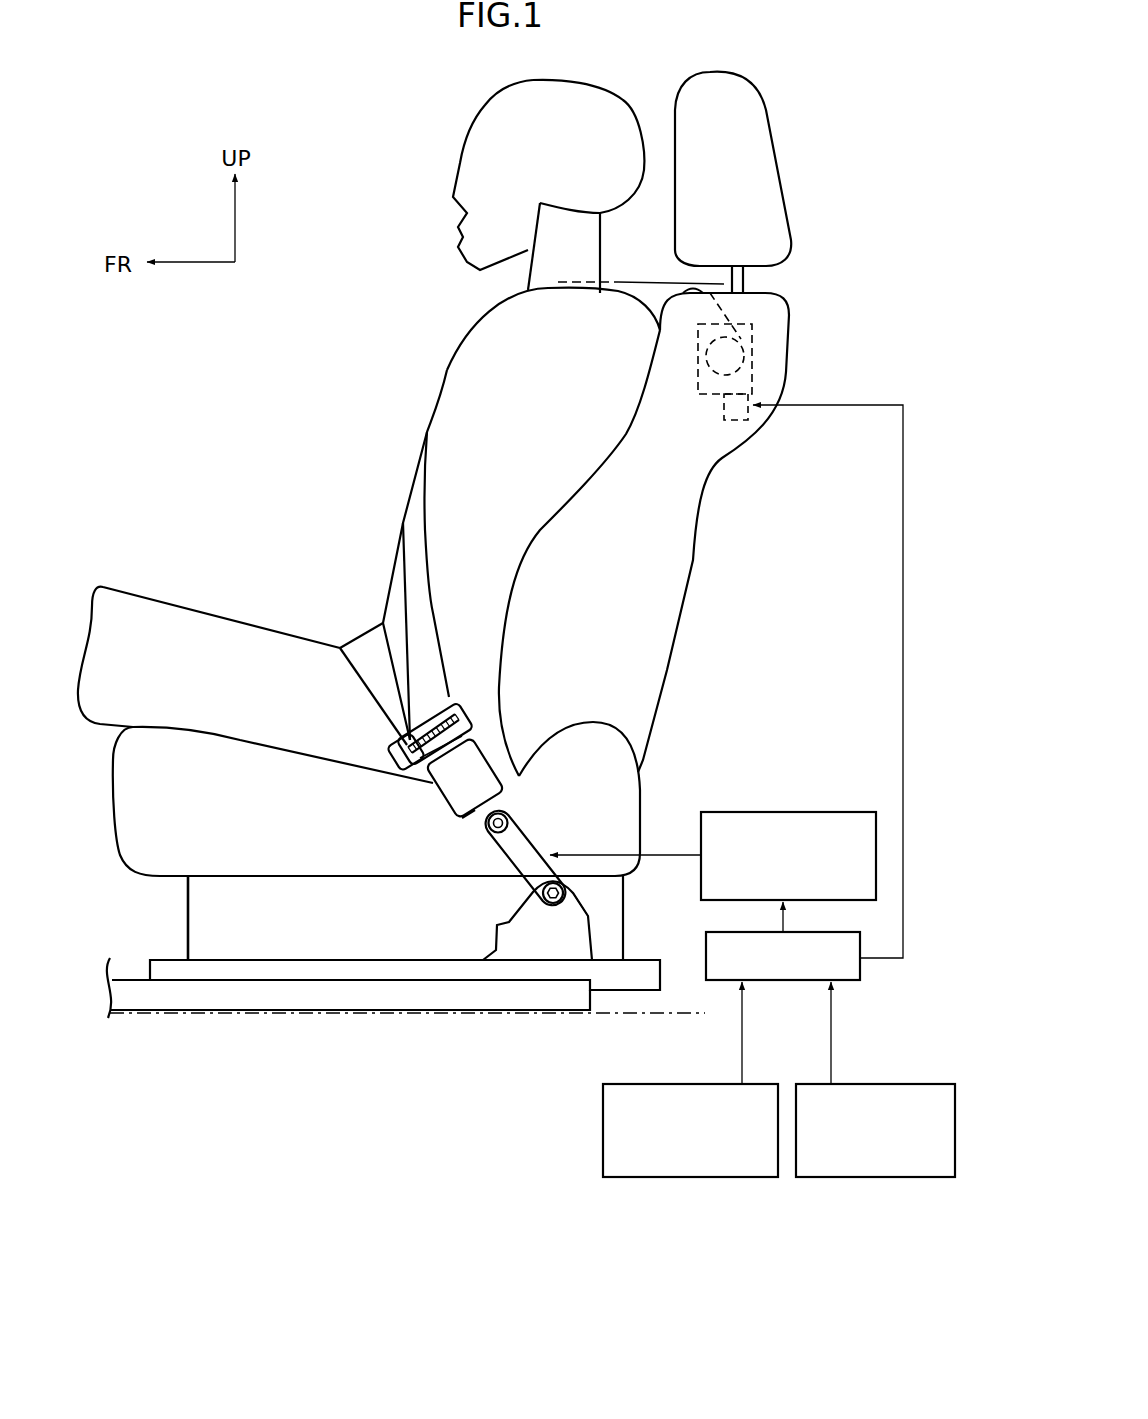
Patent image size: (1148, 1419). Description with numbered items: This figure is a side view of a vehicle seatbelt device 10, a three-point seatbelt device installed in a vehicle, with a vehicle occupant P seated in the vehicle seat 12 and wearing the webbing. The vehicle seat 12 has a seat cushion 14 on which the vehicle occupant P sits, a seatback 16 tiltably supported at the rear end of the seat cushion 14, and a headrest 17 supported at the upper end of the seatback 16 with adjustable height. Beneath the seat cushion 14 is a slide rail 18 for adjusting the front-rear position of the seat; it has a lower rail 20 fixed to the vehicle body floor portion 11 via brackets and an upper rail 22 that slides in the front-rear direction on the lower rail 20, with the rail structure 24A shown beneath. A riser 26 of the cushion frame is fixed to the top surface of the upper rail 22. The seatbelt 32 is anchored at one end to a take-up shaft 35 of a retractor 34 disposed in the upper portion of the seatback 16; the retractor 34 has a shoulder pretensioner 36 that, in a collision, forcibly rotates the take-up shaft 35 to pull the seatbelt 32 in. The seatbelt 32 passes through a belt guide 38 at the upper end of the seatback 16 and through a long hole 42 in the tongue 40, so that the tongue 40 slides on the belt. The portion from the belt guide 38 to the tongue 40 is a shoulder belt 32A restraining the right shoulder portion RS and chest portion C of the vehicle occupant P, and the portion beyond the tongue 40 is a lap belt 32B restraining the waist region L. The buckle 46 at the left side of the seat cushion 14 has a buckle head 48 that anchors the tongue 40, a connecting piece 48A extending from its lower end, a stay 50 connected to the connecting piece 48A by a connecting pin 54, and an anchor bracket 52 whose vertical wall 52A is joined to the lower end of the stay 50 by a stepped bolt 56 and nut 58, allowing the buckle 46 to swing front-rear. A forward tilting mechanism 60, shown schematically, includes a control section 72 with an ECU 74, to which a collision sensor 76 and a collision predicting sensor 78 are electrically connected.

The vehicle seatbelt device 10 is at (443, 574).
The vehicle body floor portion 11 is at (628, 1020).
The vehicle seat 12 is at (612, 489).
The seat cushion 14 is at (110, 801).
The seatback 16 is at (693, 560).
The headrest 17 is at (776, 141).
The slide rail 18 is at (405, 976).
The lower rail 20 is at (265, 999).
The upper rail 22 is at (265, 960).
The lower rail 24A is at (388, 948).
The riser 26 is at (184, 920).
The seatbelt (webbing) 32 is at (405, 555).
The shoulder belt 32A is at (404, 522).
The lap belt 32B is at (370, 642).
The retractor 34 is at (752, 376).
The take-up shaft 35 is at (700, 366).
The shoulder pretensioner 36 is at (725, 414).
The belt guide 38 is at (712, 292).
The tongue 40 is at (466, 704).
The long hole (belt insert-through hole) 42 is at (394, 742).
The buckle (buckle device) 46 is at (494, 867).
The buckle head (buckle main body) 48 is at (491, 757).
The connecting piece 48A is at (480, 830).
The stay (buckle stay) 50 is at (530, 833).
The anchor bracket (anchor member) 52 is at (527, 979).
The vertical wall 52A is at (543, 945).
The connecting pin (hinge shaft) 54 is at (508, 813).
The stepped bolt (connecting shaft) 56 is at (575, 913).
The nut 58 is at (587, 884).
The forward tilting mechanism 60 is at (783, 811).
The control section 72 is at (752, 848).
The ECU (Electronic Control Unit) 74 is at (861, 968).
The collision sensor 76 is at (858, 1178).
The collision predicting sensor 78 is at (701, 1178).
The chest portion C is at (470, 376).
The waist region L is at (470, 660).
The vehicle occupant P is at (258, 626).
The right shoulder portion RS is at (618, 290).